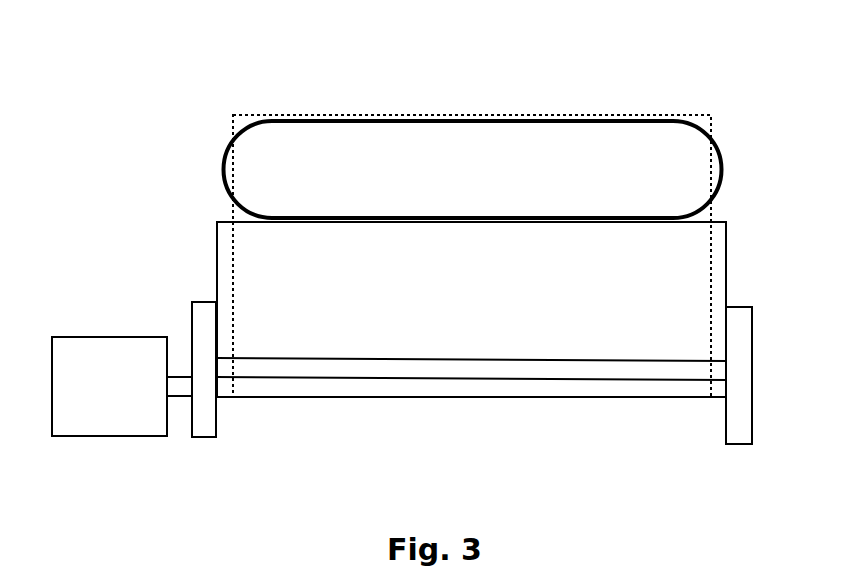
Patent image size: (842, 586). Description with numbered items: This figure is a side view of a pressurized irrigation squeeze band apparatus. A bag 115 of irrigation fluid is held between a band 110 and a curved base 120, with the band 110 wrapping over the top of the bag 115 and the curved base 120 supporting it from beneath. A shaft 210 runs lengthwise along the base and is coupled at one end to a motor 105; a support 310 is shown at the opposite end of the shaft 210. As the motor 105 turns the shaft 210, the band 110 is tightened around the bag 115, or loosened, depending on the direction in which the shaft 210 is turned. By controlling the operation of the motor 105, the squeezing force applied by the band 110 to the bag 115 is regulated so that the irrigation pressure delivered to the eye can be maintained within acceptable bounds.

The motor 105 is at (109, 386).
The band 110 is at (231, 112).
The bag 115 is at (325, 158).
The curved base 120 is at (210, 250).
The shaft 210 is at (228, 405).
The bearing support 310 is at (719, 445).